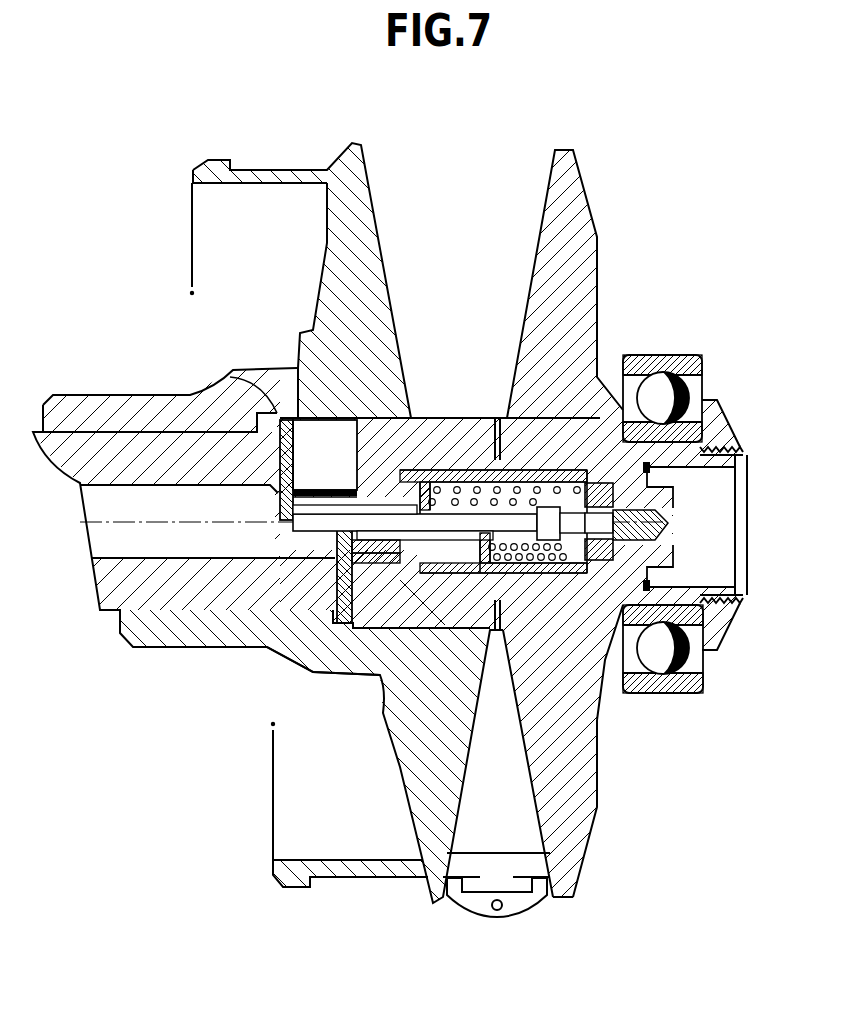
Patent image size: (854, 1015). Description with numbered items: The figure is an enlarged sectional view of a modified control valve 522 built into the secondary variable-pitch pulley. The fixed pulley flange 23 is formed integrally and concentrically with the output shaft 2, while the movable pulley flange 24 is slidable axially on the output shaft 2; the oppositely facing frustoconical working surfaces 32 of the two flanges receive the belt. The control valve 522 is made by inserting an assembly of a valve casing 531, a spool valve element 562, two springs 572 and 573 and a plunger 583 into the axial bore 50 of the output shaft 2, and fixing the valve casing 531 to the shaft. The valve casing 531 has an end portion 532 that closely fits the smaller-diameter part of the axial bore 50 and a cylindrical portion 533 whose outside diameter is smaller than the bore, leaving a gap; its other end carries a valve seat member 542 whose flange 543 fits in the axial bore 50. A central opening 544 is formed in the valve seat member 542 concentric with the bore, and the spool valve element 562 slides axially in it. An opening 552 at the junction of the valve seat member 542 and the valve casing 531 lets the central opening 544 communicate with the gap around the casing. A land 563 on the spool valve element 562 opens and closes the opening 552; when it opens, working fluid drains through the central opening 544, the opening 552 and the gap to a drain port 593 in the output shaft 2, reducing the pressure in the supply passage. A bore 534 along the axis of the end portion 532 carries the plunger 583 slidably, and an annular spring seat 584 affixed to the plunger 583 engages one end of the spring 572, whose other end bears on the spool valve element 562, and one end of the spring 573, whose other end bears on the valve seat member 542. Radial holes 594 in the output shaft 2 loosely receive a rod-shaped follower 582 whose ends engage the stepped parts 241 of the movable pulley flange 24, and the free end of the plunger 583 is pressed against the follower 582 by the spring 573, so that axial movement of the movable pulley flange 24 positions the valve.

The output shaft 2 is at (190, 646).
The fixed pulley flange 23 is at (588, 197).
The movable pulley flange 24 is at (325, 270).
The frustoconical working surfaces 32 is at (378, 224).
The axial bore 50 is at (727, 466).
The stepped parts 241 is at (233, 369).
The control valve 522 is at (690, 510).
The valve casing 531 is at (420, 582).
The end portion 532 is at (393, 557).
The cylindrical portion 533 is at (460, 563).
The bore 534 is at (360, 527).
The valve seat member 542 is at (653, 562).
The flange 543 is at (648, 482).
The central opening 544 is at (705, 538).
The opening 552 is at (597, 481).
The spool valve element 562 is at (570, 535).
The land 563 is at (600, 534).
The spring 572 is at (513, 500).
The spring 573 is at (553, 488).
The follower 582 is at (279, 420).
The plunger 583 is at (387, 490).
The annular spring seat 584 is at (480, 552).
The drain port 593 is at (495, 440).
The radial holes 594 is at (323, 460).